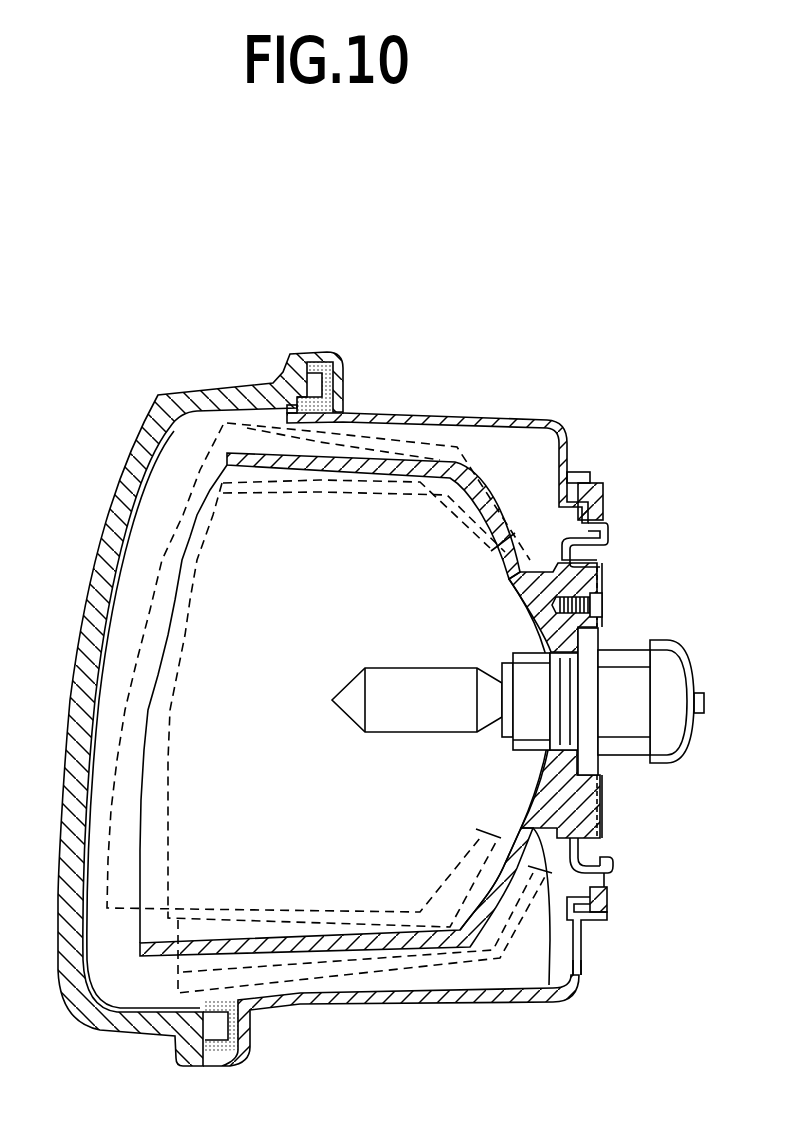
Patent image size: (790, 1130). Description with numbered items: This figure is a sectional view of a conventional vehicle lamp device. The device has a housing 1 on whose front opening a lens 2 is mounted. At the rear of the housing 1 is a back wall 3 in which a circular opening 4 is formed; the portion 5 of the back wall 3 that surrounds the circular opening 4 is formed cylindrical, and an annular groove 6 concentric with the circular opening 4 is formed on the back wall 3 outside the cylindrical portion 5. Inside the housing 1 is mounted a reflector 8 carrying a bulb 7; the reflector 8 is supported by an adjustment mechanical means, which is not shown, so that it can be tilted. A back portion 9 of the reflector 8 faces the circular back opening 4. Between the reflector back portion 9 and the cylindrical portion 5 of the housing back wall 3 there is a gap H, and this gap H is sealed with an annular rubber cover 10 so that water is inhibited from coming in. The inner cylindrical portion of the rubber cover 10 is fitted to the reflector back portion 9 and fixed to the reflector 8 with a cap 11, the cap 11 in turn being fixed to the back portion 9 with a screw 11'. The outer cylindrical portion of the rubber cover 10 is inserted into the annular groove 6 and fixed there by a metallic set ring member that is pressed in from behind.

The housing 1 is at (457, 416).
The lens 2 is at (159, 392).
The back wall 3 is at (582, 966).
The circular opening 4 is at (583, 525).
The cylindrical portion 5 is at (586, 485).
The annular groove 6 is at (577, 470).
The bulb 7 is at (382, 661).
The reflector 8 is at (282, 950).
The back portion 9 is at (560, 792).
The annular rubber cover 10 is at (616, 866).
The cap 11 is at (641, 714).
The screw 11' is at (616, 602).
The gap H is at (592, 862).